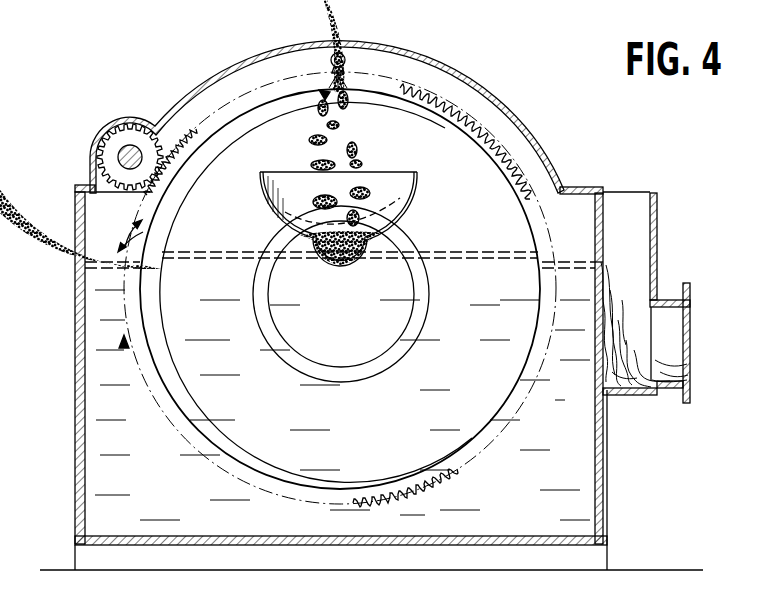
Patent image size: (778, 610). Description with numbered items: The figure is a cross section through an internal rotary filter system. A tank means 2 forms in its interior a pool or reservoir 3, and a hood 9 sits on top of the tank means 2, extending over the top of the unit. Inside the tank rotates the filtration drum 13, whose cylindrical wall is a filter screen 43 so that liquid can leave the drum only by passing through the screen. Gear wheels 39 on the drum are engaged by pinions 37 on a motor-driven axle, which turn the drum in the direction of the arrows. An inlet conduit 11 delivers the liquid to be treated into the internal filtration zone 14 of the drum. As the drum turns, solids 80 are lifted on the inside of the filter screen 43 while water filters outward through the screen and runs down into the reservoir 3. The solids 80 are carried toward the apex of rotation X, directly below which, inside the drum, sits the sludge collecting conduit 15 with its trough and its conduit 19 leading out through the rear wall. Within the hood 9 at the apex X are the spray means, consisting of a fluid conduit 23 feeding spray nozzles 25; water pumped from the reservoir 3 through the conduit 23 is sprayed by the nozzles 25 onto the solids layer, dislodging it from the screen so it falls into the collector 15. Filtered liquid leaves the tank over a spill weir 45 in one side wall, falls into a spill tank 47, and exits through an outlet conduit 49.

The tank means 2 is at (80, 484).
The pool or reservoir 3 is at (562, 443).
The hood 9 is at (527, 130).
The inlet conduit 11 is at (400, 343).
The filtration drum 13 is at (142, 207).
The internal filtration zone 14 is at (230, 327).
The sludge collecting conduit 15 is at (418, 180).
The conduit 19 is at (350, 264).
The fluid conduit 23 is at (340, 52).
The spray nozzles 25 is at (345, 72).
The pinions 37 is at (128, 137).
The gear wheels 39 is at (187, 143).
The filter screen 43 is at (207, 452).
The spill weir 45 is at (592, 262).
The spill tank 47 is at (633, 251).
The outlet conduit 49 is at (670, 394).
The solids 80 is at (196, 178).
The apex of rotation X is at (325, 95).